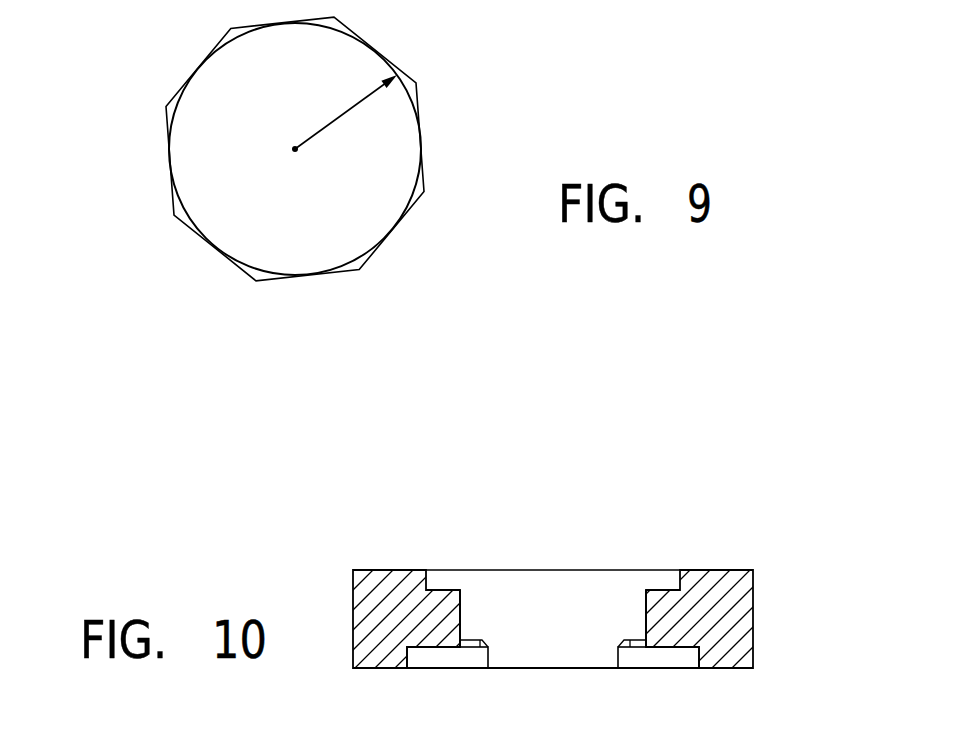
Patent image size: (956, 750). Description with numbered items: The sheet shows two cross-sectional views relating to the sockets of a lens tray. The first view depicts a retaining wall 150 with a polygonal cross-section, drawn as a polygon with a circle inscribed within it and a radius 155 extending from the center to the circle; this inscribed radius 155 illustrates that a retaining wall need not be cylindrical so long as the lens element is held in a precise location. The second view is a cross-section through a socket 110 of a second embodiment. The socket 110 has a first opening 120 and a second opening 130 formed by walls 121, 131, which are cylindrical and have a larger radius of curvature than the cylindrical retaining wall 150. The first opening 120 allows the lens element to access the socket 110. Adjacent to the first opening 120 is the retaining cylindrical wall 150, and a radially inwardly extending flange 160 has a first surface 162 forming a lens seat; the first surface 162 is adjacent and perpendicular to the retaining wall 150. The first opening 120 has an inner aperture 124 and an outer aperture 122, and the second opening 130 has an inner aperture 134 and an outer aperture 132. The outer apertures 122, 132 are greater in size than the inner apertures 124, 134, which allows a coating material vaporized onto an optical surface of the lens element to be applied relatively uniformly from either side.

In FIG. 9, the radius 155 is at (322, 128).
In FIG. 10, the socket 110 is at (772, 553).
In FIG. 10, the first opening 120 is at (670, 575).
In FIG. 10, the wall 121 is at (674, 574).
In FIG. 10, the outer aperture 122 is at (437, 571).
In FIG. 10, the inner aperture 124 is at (646, 615).
In FIG. 10, the second opening 130 is at (518, 660).
In FIG. 10, the wall 131 is at (693, 652).
In FIG. 10, the outer aperture 132 is at (420, 668).
In FIG. 10, the inner aperture 134 is at (488, 655).
In FIG. 10, the retaining wall 150 is at (460, 607).
In FIG. 10, the flange 160 is at (627, 641).
In FIG. 10, the first surface 162 is at (473, 638).